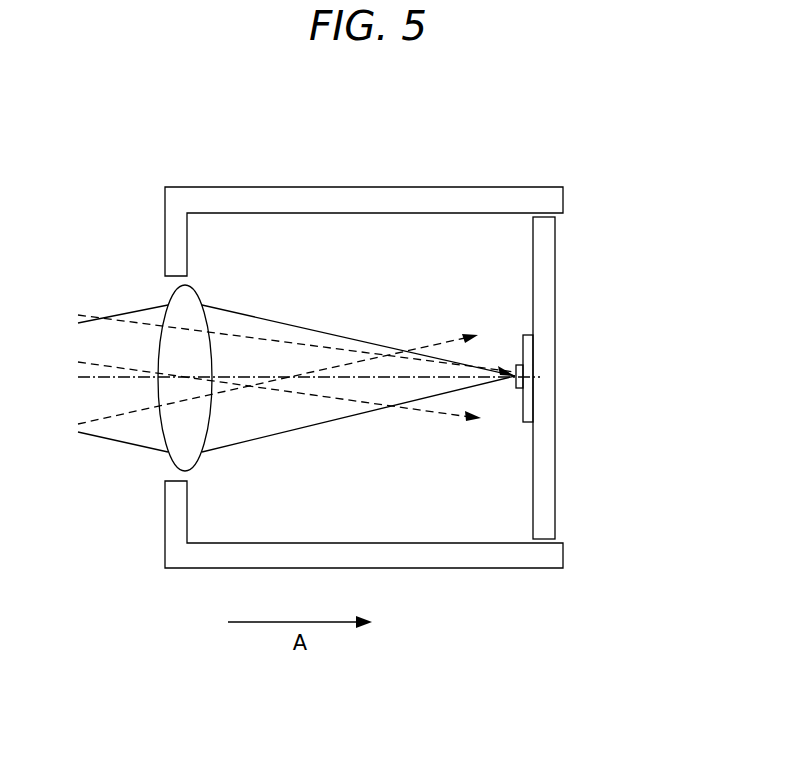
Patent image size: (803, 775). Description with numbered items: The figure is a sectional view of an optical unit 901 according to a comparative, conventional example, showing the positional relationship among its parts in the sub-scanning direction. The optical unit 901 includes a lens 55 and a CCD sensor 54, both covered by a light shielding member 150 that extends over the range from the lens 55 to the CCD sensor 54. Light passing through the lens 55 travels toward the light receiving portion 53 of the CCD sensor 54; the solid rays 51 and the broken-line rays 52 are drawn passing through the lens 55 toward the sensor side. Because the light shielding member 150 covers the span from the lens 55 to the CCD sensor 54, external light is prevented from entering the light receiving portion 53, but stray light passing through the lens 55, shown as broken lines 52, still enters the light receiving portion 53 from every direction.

The optical unit 901 is at (366, 160).
The light shielding member 150 is at (174, 250).
The lens 55 is at (192, 300).
The off-axis light rays 52 is at (320, 330).
The on-axis light rays 51 is at (348, 376).
The light receiving portion 53 is at (520, 380).
The CCD sensor 54 is at (532, 412).